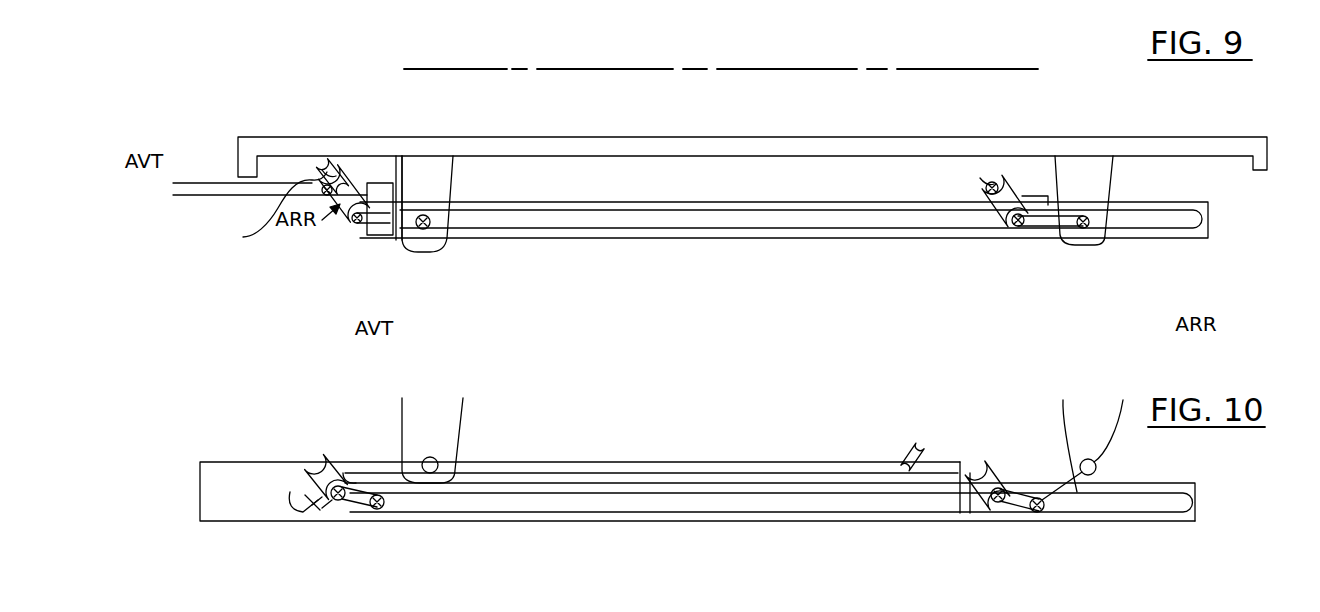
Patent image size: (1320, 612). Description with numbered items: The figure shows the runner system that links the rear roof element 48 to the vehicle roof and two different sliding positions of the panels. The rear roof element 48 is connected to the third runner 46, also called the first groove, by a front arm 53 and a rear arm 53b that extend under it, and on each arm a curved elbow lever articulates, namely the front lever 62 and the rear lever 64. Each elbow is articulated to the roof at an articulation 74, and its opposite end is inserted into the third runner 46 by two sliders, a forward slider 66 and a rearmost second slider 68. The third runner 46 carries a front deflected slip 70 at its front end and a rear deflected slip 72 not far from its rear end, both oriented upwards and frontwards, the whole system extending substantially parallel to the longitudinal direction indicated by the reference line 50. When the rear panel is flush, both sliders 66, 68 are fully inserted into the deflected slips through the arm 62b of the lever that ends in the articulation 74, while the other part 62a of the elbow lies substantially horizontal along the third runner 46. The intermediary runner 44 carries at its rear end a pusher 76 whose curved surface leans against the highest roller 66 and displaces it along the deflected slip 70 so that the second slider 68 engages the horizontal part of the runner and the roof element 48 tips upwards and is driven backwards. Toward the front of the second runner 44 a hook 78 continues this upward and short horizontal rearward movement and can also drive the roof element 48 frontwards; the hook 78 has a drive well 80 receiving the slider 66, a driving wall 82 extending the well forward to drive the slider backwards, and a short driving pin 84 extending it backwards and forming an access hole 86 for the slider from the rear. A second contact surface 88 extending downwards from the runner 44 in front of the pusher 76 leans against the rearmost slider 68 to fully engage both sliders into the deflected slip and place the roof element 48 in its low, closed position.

In FIG. 9, the intermediary runner 44 is at (200, 195).
In FIG. 10, the intermediary runner 44 is at (230, 470).
In FIG. 9, the third runner 46 is at (720, 224).
In FIG. 10, the third runner 46 is at (736, 507).
In FIG. 9, the rear roof element 48 is at (605, 136).
In FIG. 9, the reference line 50 is at (795, 68).
In FIG. 9, the front arm 53 is at (445, 178).
In FIG. 9, the rear arm 53b is at (1098, 181).
In FIG. 9, the front lever 62 is at (335, 230).
In FIG. 10, the front lever 62 is at (401, 473).
In FIG. 9, the other part of the elbow 62a is at (400, 242).
In FIG. 10, the other part of the elbow 62a is at (1068, 490).
In FIG. 9, the arm of the lever 62b is at (990, 230).
In FIG. 10, the arm of the lever 62b is at (1010, 503).
In FIG. 9, the rear lever 64 is at (1050, 225).
In FIG. 10, the rear lever 64 is at (1050, 490).
In FIG. 9, the slider 66 is at (322, 170).
In FIG. 10, the slider 66 is at (338, 480).
In FIG. 9, the second slider 68 is at (352, 238).
In FIG. 9, the front deflected slip 70 is at (345, 168).
In FIG. 9, the rear deflected slip 72 is at (1005, 175).
In FIG. 10, the rear deflected slip 72 is at (995, 460).
In FIG. 9, the articulation of the roof 74 is at (428, 232).
In FIG. 10, the articulation of the roof 74 is at (380, 498).
In FIG. 9, the pusher 76 is at (269, 212).
In FIG. 10, the pusher 76 is at (913, 443).
In FIG. 10, the hook 78 is at (308, 514).
In FIG. 10, the drive well 80 is at (320, 512).
In FIG. 10, the driving wall 82 is at (292, 508).
In FIG. 10, the short driving pin 84 is at (332, 507).
In FIG. 10, the access hole 86 is at (342, 503).
In FIG. 9, the second contact surface 88 is at (380, 180).
In FIG. 10, the second contact surface 88 is at (965, 515).